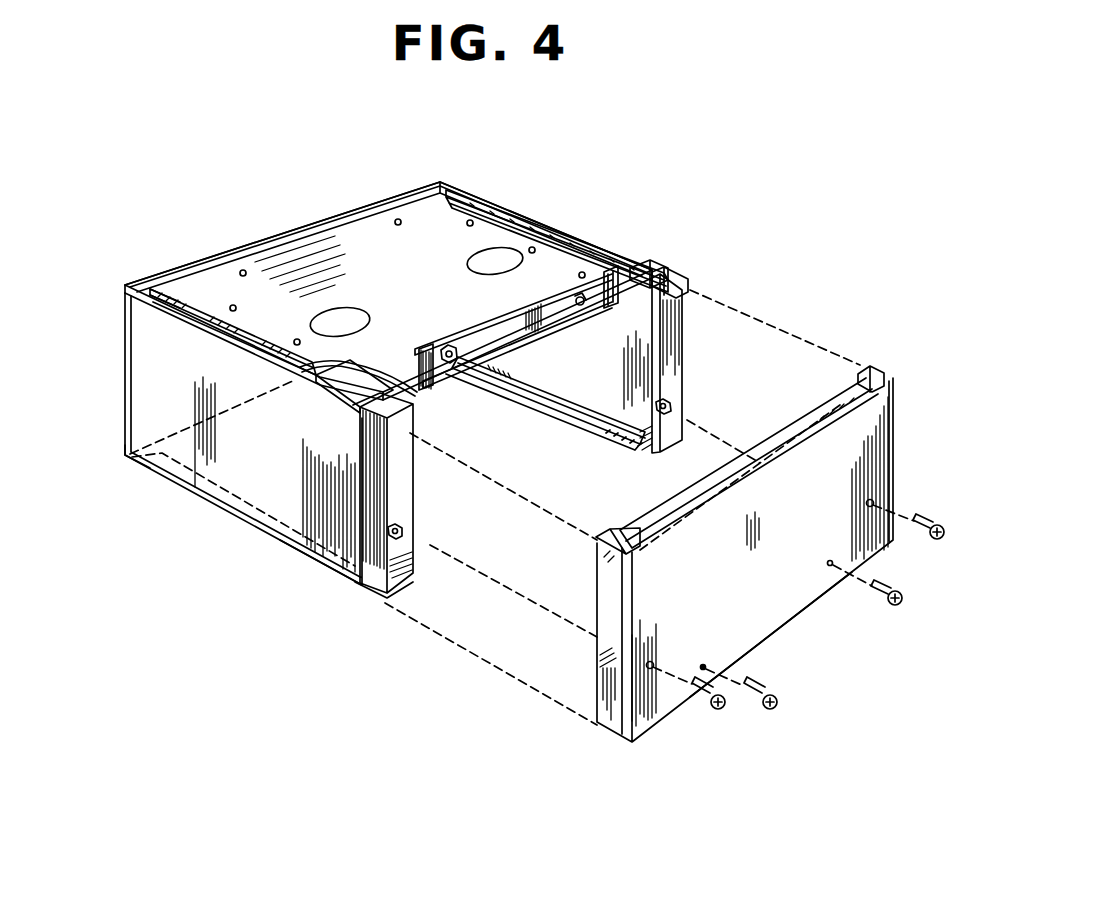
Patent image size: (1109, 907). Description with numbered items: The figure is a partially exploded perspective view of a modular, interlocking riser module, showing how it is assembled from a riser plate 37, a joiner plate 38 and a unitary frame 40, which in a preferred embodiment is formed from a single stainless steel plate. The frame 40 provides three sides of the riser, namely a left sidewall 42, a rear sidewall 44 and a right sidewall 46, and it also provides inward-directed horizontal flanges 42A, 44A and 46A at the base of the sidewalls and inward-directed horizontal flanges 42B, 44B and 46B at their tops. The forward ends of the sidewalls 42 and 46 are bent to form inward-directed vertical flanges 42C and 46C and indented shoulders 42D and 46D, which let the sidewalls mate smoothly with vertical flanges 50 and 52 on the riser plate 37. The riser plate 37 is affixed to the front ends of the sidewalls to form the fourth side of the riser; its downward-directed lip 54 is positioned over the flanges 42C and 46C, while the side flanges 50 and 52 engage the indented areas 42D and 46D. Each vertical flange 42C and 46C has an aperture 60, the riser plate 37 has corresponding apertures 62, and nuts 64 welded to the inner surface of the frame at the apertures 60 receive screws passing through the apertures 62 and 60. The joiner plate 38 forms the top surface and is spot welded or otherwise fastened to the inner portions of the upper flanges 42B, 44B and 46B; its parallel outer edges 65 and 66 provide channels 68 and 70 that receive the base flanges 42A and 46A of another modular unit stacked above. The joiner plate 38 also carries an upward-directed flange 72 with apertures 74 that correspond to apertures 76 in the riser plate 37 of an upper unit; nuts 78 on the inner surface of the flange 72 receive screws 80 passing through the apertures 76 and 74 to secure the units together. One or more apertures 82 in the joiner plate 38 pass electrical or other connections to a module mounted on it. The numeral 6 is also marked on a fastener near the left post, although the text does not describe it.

The fastener knob 6 is at (405, 535).
The riser plate 37 is at (790, 590).
The joiner plate 38 is at (350, 274).
The unitary frame 40 is at (566, 217).
The left sidewall 42 is at (250, 478).
The inward-directed horizontal flange 42A is at (312, 548).
The inward-directed horizontal flange 42B is at (335, 383).
The inward-directed vertical flange 42C is at (400, 502).
The indented shoulder 42D is at (374, 592).
The rear sidewall 44 is at (200, 262).
The inward-directed horizontal flange 44A is at (155, 452).
The inward-directed horizontal flange 44B is at (285, 244).
The right sidewall 46 is at (590, 380).
The inward-directed horizontal flange 46A is at (531, 383).
The inward-directed horizontal flange 46B is at (643, 292).
The inward-directed vertical flange 46C is at (670, 367).
The indented shoulder 46D is at (665, 273).
The vertical flange 50 is at (597, 637).
The vertical flange 52 is at (875, 368).
The downward-directed lip 54 is at (617, 530).
The aperture 60 is at (672, 409).
The aperture 62 is at (872, 502).
The nut 64 is at (645, 432).
The outer edge 65 is at (170, 292).
The outer edge 66 is at (500, 212).
The channel 68 is at (235, 338).
The channel 70 is at (647, 268).
The upward-directed flange 72 is at (481, 340).
The aperture 74 is at (583, 312).
The aperture 76 is at (828, 560).
The nut 78 is at (416, 347).
The screw 80 is at (765, 711).
The aperture 82 is at (358, 316).